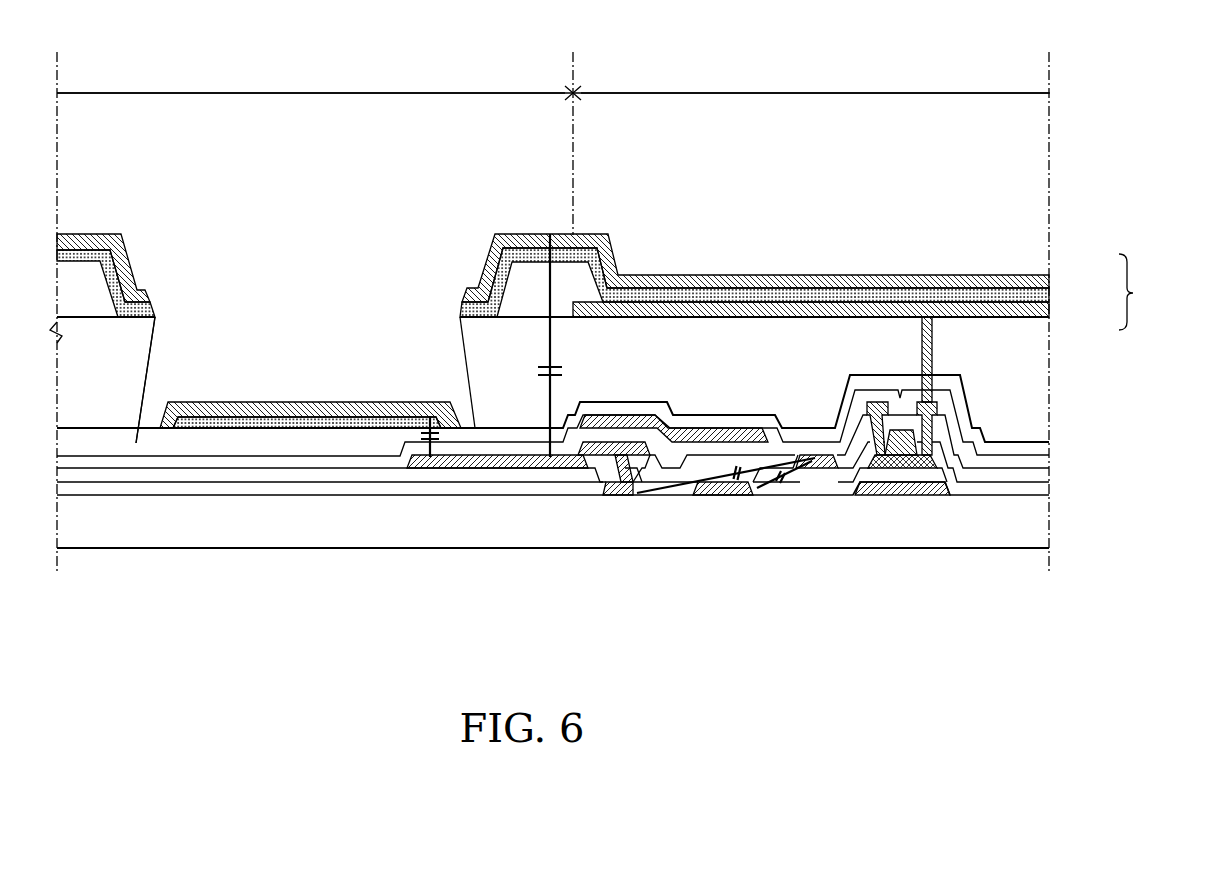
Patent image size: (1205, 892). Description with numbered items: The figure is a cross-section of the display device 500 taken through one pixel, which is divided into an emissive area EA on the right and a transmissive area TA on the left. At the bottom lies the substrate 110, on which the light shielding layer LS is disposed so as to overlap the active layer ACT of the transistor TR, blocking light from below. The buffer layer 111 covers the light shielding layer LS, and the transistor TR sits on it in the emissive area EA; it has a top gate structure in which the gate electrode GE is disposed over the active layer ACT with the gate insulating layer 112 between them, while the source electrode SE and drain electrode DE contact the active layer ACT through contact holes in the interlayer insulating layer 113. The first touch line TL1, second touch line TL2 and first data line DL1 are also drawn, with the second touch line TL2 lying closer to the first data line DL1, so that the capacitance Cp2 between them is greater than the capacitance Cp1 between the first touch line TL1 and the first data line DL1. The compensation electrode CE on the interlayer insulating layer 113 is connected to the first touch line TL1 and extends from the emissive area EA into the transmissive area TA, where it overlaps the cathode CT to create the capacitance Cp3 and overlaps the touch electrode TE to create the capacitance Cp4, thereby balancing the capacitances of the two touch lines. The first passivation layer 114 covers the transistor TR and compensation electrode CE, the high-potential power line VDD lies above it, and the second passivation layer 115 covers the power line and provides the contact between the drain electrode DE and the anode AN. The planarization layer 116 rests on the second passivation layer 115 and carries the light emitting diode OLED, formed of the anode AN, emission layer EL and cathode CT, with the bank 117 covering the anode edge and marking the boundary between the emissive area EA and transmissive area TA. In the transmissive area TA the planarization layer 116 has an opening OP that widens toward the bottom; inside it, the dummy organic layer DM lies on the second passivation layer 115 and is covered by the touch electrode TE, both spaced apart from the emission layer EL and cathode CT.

The display device 500 is at (966, 21).
The transmissive area TA is at (311, 75).
The emissive area EA is at (815, 75).
The bank 117 is at (530, 287).
The high-potential power line VDD is at (728, 427).
The cathode CT is at (1050, 280).
The emission layer EL is at (1050, 295).
The anode AN is at (1050, 310).
The light emitting diode OLED is at (1154, 292).
The planarization layer 116 is at (1038, 356).
The gate insulating layer 112 is at (927, 378).
The second passivation layer 115 is at (1038, 446).
The first passivation layer 114 is at (1038, 464).
The interlayer insulating layer 113 is at (1038, 478).
The buffer layer 111 is at (1038, 493).
The substrate 110 is at (1045, 527).
The capacitance Cp3 is at (572, 345).
The capacitance Cp4 is at (451, 436).
The capacitance Cp1 is at (726, 471).
The capacitance Cp2 is at (784, 482).
The dummy organic layer DM is at (260, 428).
The touch electrode TE is at (324, 407).
The opening OP is at (340, 373).
The compensation electrode CE is at (515, 462).
The first touch line TL1 is at (615, 497).
The second touch line TL2 is at (722, 495).
The first data line DL1 is at (816, 470).
The source electrode SE is at (870, 465).
The active layer ACT is at (892, 470).
The gate electrode GE is at (898, 456).
The drain electrode DE is at (921, 470).
The light shielding layer LS is at (937, 497).
The transistor TR is at (840, 606).